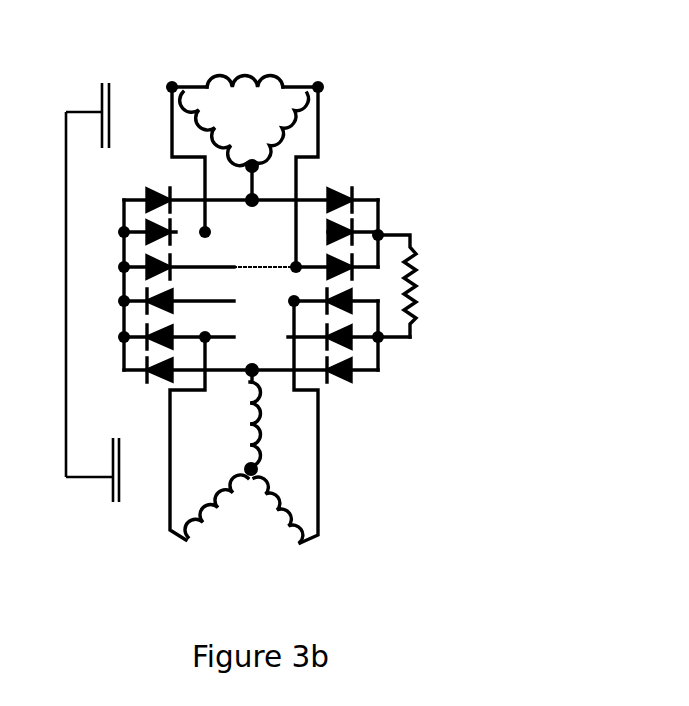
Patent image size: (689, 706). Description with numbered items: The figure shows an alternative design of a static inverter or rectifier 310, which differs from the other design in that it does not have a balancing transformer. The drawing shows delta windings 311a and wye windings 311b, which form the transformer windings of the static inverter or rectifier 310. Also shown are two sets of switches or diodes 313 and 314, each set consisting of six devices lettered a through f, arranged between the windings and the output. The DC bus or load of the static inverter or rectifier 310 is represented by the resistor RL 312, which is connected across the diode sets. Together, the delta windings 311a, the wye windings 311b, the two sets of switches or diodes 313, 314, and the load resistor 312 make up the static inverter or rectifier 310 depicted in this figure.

The static inverter or rectifier 310 is at (466, 96).
The delta windings 311a is at (226, 80).
The wye windings 311b is at (301, 546).
The resistor RL 312 is at (418, 262).
The switches or diodes 313 is at (132, 191).
The switches or diodes 314 is at (135, 384).